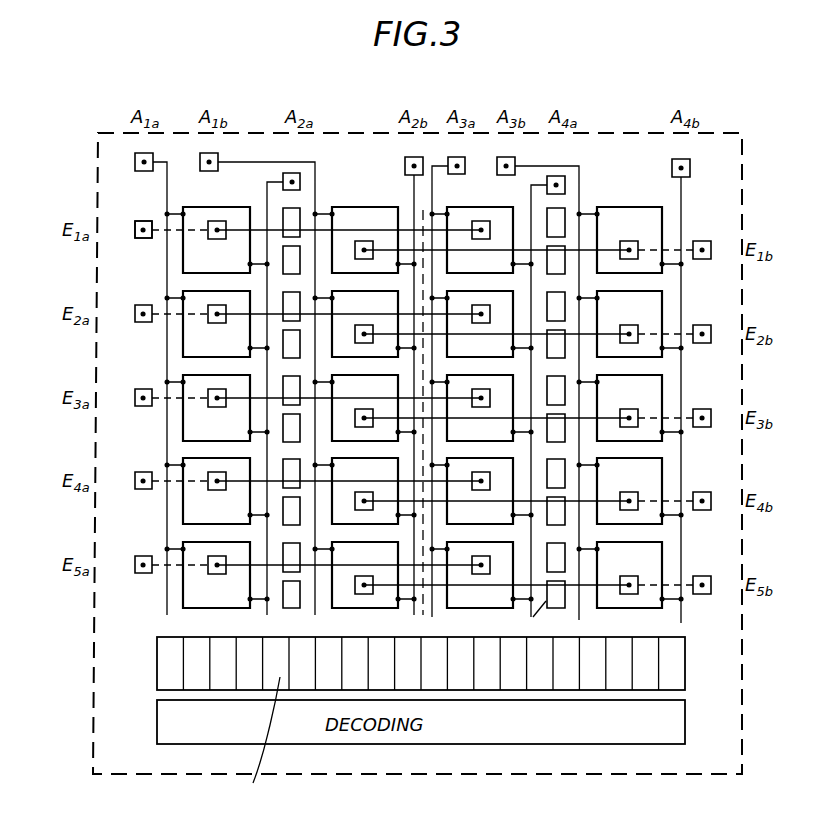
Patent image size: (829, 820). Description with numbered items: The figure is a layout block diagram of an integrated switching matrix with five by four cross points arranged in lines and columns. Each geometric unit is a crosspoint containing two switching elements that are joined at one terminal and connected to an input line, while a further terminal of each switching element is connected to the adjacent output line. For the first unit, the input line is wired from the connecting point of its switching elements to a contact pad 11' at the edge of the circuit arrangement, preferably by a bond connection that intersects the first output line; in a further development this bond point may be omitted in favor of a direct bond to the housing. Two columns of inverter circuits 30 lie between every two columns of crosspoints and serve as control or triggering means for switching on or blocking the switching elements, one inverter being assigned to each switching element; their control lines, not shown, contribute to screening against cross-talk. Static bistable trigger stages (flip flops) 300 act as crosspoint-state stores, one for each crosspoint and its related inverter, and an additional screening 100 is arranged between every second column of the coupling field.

The additional screening 100 is at (423, 225).
The contact pad 11' is at (149, 217).
The inverter circuit 30 is at (556, 598).
The static bistable trigger stage (flip flop) 300 is at (172, 668).